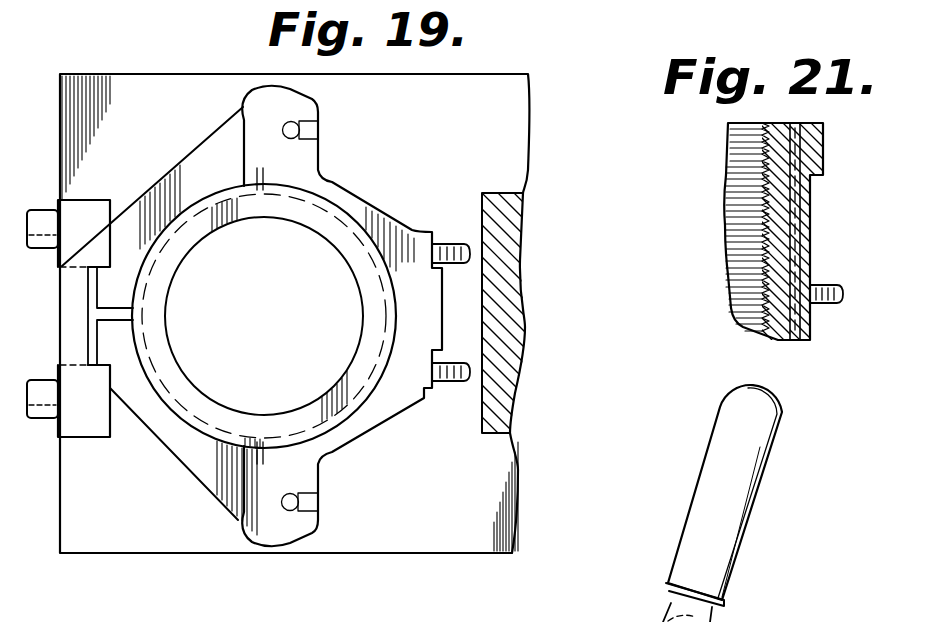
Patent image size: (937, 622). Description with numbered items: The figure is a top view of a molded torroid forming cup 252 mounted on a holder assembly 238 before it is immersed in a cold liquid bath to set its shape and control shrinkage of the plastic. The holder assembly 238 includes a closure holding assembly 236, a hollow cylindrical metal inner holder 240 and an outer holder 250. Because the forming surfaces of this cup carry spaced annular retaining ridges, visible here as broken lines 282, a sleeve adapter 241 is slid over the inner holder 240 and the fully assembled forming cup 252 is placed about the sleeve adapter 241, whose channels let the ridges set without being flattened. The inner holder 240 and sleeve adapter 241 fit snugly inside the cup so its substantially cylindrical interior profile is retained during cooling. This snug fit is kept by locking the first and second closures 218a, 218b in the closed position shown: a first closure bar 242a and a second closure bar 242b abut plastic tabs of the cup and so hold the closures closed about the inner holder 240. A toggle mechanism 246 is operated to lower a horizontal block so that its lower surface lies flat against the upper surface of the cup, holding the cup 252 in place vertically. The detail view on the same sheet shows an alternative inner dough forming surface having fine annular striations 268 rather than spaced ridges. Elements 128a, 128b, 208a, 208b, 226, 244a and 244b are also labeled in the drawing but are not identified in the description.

In FIG. 19, the set screw 128a is at (452, 382).
In FIG. 19, the set screw 128b is at (452, 264).
In FIG. 19, the mounting ear / bolt hole 208a is at (280, 527).
In FIG. 19, the mounting ear / bolt hole 208b is at (293, 91).
In FIG. 19, the first closure 218a is at (175, 427).
In FIG. 19, the second closure 218b is at (214, 165).
In FIG. 19, the housing 226 is at (383, 400).
In FIG. 19, the closure holding assembly 236 is at (120, 256).
In FIG. 19, the holder assembly 238 is at (447, 563).
In FIG. 19, the inner holder 240 is at (355, 238).
In FIG. 19, the sleeve adapter 241 is at (233, 420).
In FIG. 19, the first closure bar 242a is at (77, 417).
In FIG. 19, the second closure bar 242b is at (82, 213).
In FIG. 19, the lower jaw 244a is at (112, 348).
In FIG. 19, the upper jaw 244b is at (120, 294).
In FIG. 19, the outer holder 250 is at (482, 518).
In FIG. 19, the forming cup 252 is at (382, 187).
In FIG. 19, the spaced annular retaining ridges 282 is at (387, 329).
In FIG. 21, the fine annular striations 268 is at (716, 220).
In FIG. 21, the toggle mechanism 246 is at (775, 621).